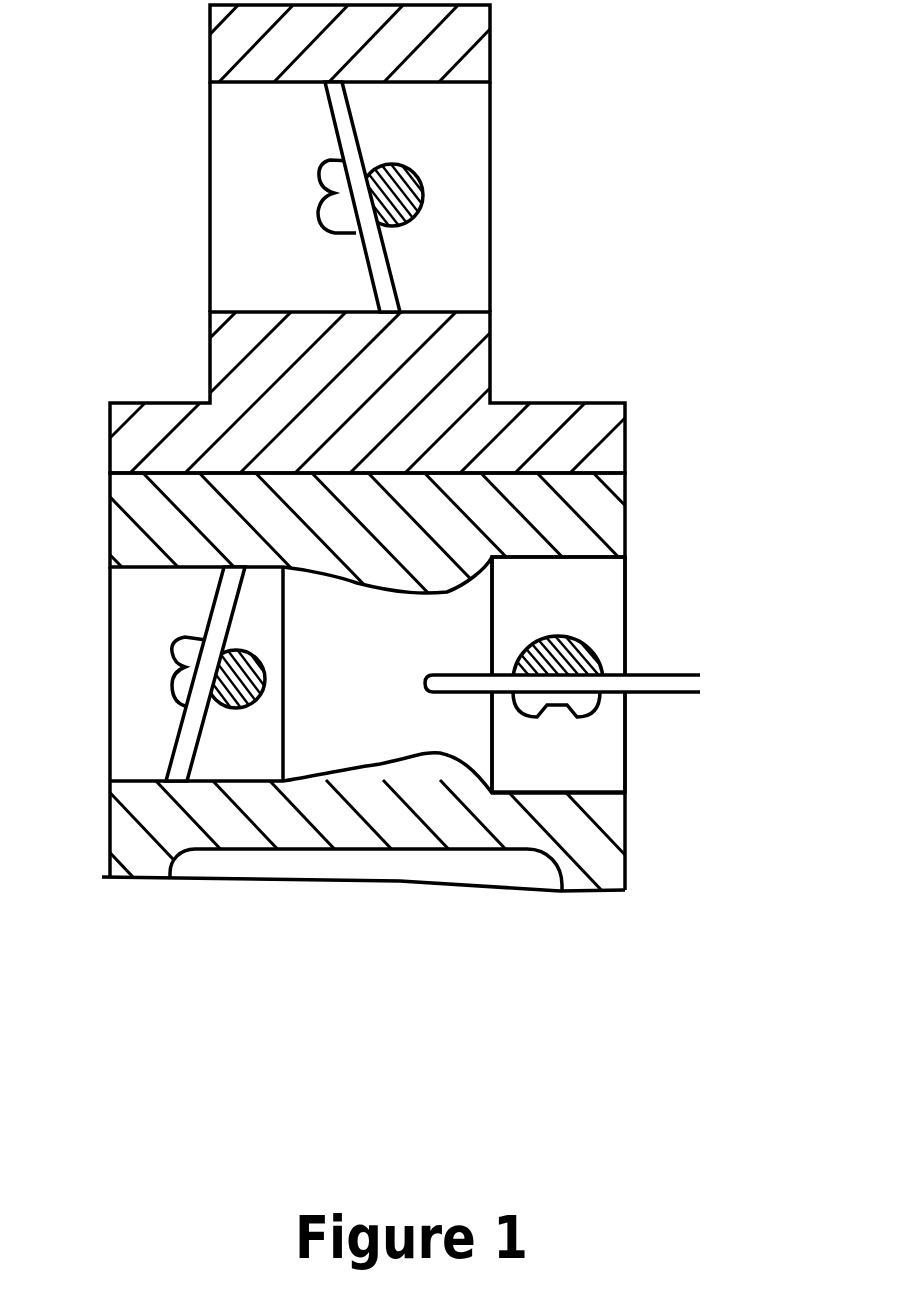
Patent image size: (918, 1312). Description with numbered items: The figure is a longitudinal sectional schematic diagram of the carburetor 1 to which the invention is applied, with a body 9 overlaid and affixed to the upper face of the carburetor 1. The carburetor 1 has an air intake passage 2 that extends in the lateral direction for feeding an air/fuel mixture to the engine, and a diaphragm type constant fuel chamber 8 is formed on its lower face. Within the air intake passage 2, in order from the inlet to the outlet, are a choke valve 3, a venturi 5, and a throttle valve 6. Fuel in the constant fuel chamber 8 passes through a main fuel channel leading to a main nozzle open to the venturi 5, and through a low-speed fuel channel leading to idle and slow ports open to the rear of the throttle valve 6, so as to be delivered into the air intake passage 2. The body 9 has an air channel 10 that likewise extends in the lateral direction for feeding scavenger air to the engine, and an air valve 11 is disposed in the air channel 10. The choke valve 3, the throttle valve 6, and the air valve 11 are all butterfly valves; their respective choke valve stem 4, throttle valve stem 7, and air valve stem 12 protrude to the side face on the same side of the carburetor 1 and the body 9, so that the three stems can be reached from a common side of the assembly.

The carburetor 1 is at (603, 509).
The air intake passage 2 is at (593, 750).
The choke valve 3 is at (700, 679).
The choke valve stem 4 is at (600, 648).
The venturi 5 is at (380, 738).
The throttle valve 6 is at (217, 612).
The throttle valve stem 7 is at (240, 717).
The constant fuel chamber 8 is at (495, 868).
The body 9 is at (234, 45).
The air channel 10 is at (458, 115).
The air valve 11 is at (332, 131).
The air valve stem 12 is at (418, 193).